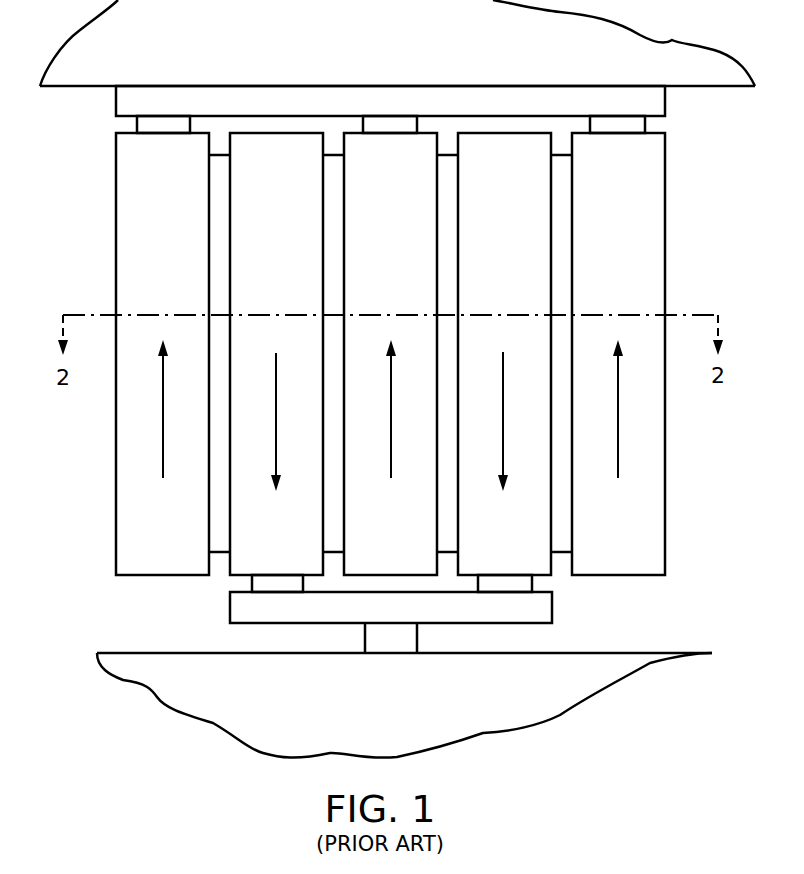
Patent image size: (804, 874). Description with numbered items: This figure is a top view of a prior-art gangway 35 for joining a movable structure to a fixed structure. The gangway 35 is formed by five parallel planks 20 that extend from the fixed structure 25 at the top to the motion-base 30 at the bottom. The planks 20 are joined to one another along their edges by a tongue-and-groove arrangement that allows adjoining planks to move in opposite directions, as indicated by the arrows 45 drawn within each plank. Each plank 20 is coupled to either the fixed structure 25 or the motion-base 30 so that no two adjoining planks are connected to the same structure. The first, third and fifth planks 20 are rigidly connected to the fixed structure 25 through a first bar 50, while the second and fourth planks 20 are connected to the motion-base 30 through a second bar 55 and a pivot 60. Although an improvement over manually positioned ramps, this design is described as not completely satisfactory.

The plank 20 is at (665, 175).
The fixed structure 25 is at (310, 54).
The motion-base 30 is at (374, 725).
The gangway 35 is at (96, 177).
The arrows 45 is at (618, 412).
The first bar 50 is at (665, 95).
The second bar 55 is at (552, 600).
The pivot 60 is at (426, 640).